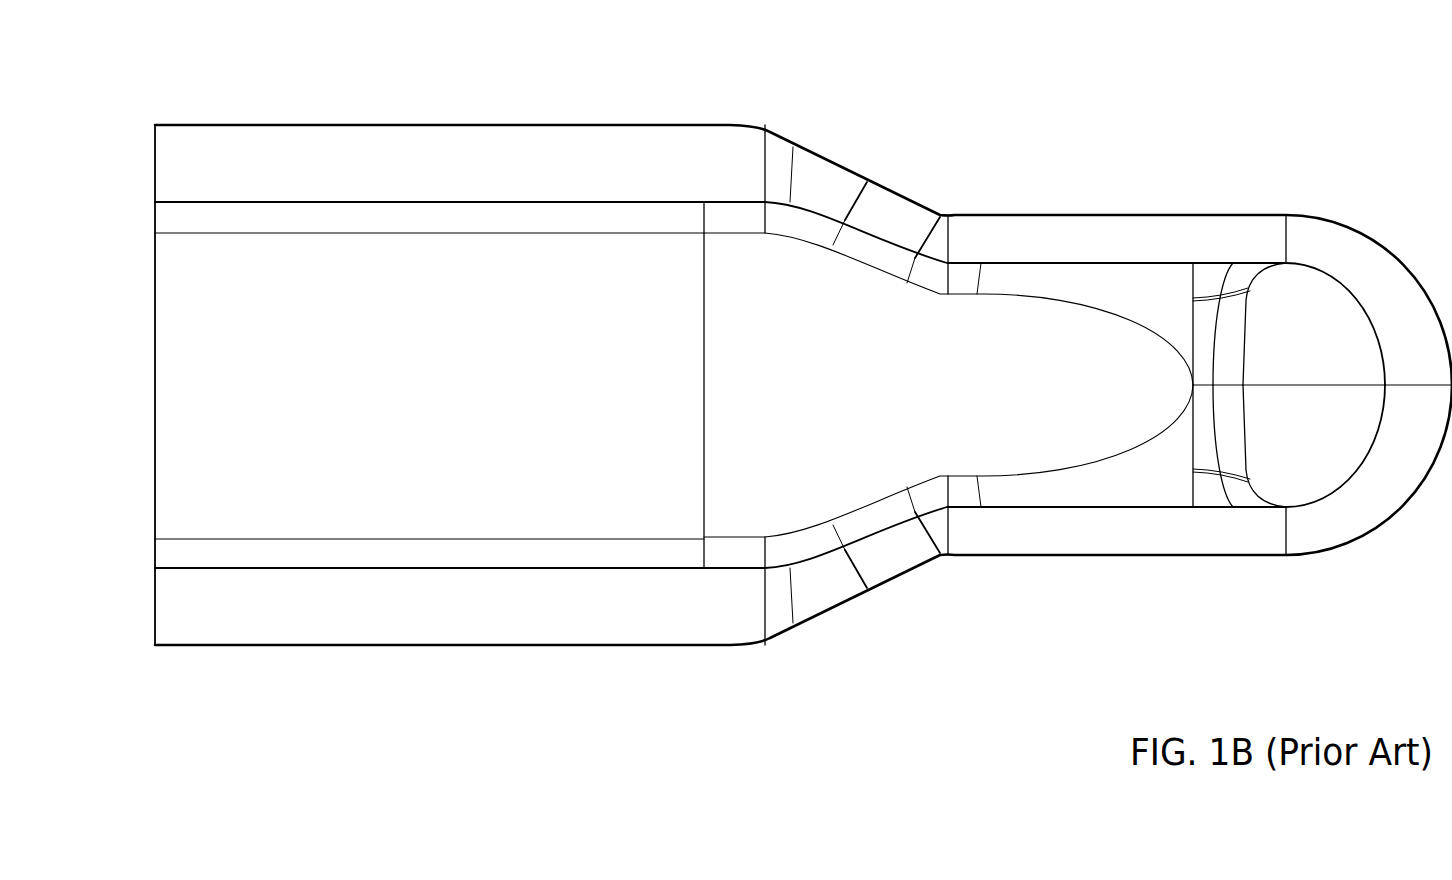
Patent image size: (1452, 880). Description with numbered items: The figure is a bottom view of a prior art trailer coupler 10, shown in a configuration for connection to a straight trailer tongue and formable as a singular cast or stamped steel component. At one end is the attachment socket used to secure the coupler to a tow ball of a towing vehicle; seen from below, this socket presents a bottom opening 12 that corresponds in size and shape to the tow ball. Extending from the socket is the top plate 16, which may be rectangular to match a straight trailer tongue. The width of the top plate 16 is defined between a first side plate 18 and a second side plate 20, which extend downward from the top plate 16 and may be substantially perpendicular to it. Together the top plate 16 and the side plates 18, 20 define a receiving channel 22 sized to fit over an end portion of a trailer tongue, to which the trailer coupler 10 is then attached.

The trailer coupler 10 is at (1099, 142).
The bottom opening 12 is at (1305, 320).
The top plate 16 is at (430, 386).
The first side plate 18 is at (425, 558).
The second side plate 20 is at (397, 217).
The receiving channel 22 is at (245, 430).